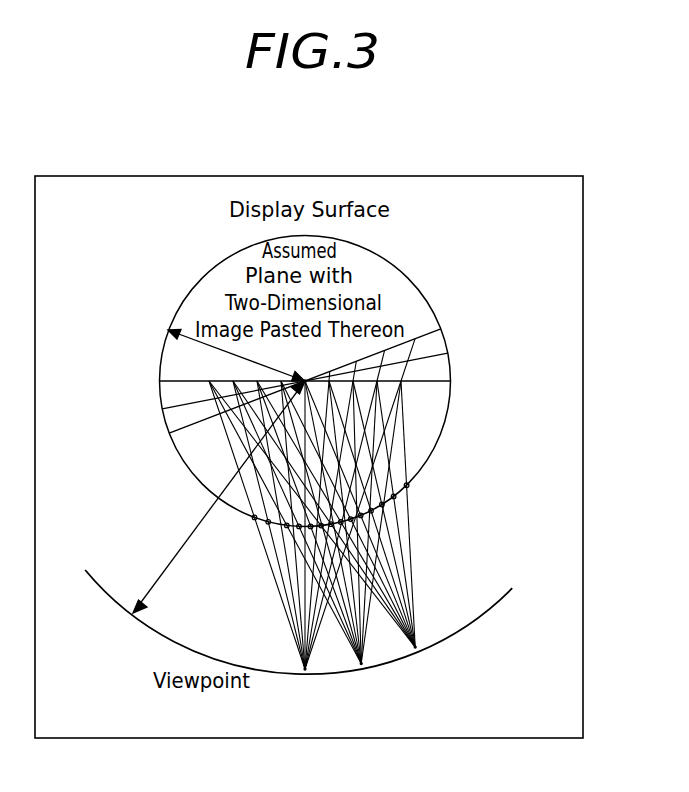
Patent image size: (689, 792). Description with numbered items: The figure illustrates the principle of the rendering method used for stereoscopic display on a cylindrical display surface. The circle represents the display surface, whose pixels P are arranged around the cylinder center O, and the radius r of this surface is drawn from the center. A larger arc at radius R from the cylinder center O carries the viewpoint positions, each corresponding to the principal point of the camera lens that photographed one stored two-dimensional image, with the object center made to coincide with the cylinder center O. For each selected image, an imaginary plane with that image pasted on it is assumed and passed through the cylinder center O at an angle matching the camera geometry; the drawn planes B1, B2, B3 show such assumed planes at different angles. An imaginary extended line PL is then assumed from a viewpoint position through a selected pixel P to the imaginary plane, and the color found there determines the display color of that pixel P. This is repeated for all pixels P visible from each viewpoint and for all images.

The cylinder center O is at (306, 379).
The radius of display surface r is at (236, 356).
The radius of viewpoint arc R is at (219, 497).
The imaginary plane B1 is at (317, 383).
The imaginary plane B2 is at (318, 375).
The imaginary plane B3 is at (321, 371).
The imaginary extended line PL is at (410, 568).
The pixel P is at (252, 519).